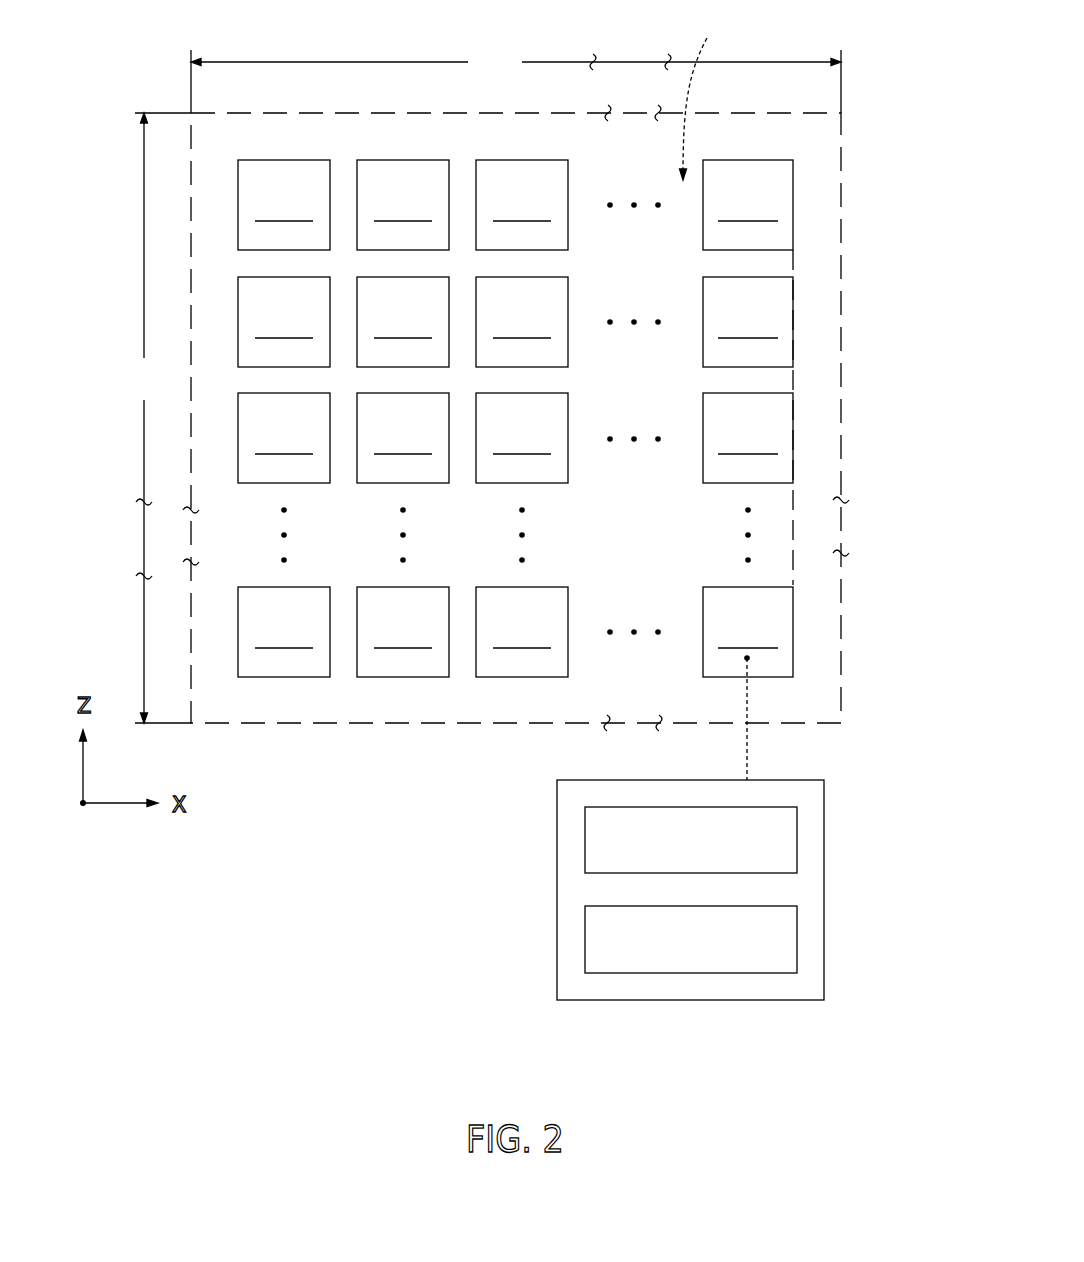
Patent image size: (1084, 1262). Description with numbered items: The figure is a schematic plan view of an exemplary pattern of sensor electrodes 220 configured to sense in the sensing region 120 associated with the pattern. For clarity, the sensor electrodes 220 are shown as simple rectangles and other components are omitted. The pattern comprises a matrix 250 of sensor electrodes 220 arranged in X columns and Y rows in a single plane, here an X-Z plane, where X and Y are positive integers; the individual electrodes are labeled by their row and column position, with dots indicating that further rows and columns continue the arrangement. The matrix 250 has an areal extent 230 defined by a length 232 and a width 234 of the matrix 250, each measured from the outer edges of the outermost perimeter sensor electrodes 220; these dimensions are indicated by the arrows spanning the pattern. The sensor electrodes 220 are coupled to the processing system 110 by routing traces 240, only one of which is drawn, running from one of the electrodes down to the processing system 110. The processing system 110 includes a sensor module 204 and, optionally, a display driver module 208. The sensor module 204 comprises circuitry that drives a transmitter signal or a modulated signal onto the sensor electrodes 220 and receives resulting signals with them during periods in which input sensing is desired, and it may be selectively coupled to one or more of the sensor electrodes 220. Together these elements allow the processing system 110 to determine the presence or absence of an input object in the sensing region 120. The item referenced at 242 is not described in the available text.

The processing system 110 is at (704, 871).
The sensing region 120 is at (390, 112).
The sensor module 204 is at (797, 830).
The display driver module 208 is at (797, 932).
The sensor electrodes 220 is at (795, 510).
The areal extent 230 is at (575, 418).
The length 232 is at (516, 81).
The width 234 is at (154, 418).
The routing traces 240 is at (803, 760).
The pixel row 242 is at (805, 225).
The matrix 250 is at (797, 349).